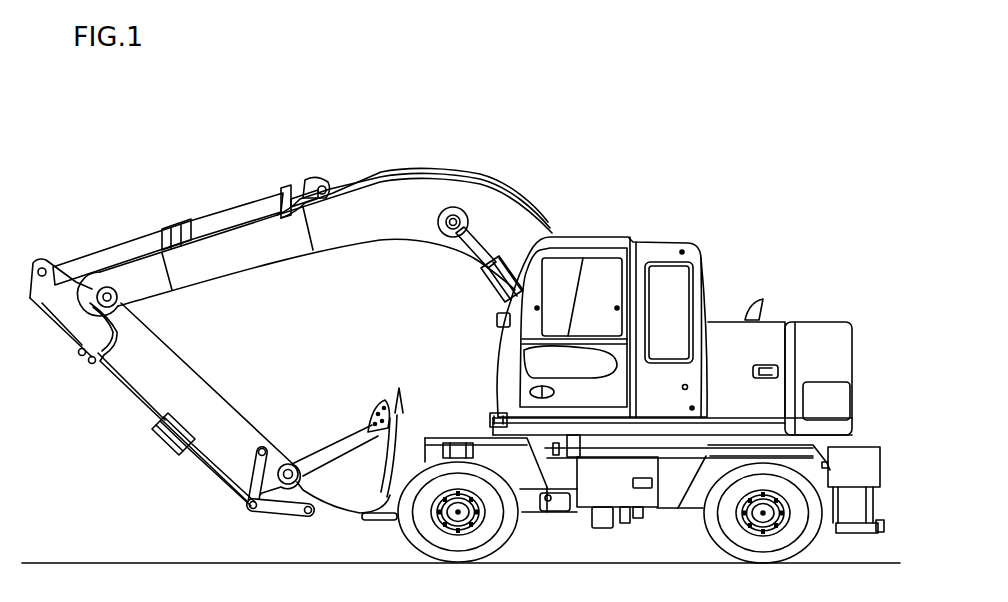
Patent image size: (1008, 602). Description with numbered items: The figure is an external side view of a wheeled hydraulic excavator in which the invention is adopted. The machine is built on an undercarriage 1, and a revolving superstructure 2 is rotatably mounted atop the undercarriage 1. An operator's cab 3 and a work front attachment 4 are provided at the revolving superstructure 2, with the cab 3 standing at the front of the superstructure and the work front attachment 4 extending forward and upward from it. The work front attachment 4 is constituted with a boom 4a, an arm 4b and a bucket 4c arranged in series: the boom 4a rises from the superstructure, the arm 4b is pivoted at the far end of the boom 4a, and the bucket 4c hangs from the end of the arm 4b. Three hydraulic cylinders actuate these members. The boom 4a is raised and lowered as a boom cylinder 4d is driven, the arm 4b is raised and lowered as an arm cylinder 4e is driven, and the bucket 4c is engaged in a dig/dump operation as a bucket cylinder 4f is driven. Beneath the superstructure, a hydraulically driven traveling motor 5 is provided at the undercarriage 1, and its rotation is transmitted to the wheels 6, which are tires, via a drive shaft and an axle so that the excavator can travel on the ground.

The undercarriage 1 is at (874, 507).
The revolving superstructure 2 is at (777, 320).
The operator's cab 3 is at (629, 234).
The work front attachment 4 is at (417, 173).
The boom 4a is at (362, 241).
The arm 4b is at (193, 372).
The bucket 4c is at (342, 446).
The boom cylinder 4d is at (480, 270).
The arm cylinder 4e is at (190, 222).
The bucket cylinder 4f is at (155, 424).
The traveling motor 5 is at (606, 528).
The wheels 6 is at (404, 544).